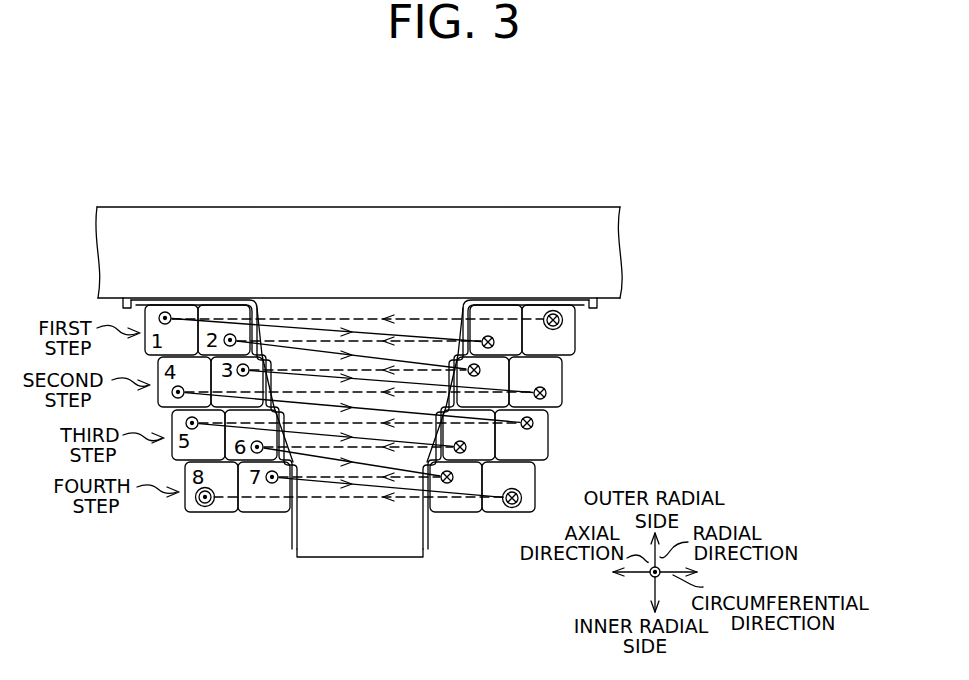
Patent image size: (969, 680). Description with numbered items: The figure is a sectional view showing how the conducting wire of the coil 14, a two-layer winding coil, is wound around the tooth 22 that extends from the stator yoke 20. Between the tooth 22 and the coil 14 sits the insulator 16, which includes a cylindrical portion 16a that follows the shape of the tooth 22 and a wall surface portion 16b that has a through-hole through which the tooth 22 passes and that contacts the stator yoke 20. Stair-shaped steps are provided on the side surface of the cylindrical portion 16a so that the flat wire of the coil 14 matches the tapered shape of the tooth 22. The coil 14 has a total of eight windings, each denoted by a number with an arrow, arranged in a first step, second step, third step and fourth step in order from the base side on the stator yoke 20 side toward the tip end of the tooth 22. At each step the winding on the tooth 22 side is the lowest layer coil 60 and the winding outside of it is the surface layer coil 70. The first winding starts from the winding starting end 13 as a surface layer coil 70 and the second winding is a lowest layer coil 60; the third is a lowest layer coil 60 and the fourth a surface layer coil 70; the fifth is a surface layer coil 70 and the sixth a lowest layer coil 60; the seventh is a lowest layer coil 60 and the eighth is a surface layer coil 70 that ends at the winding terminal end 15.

The winding starting end 13 is at (586, 322).
The coil 14 is at (529, 449).
The winding terminal end 15 is at (195, 504).
The insulator 16 is at (450, 168).
The cylindrical portion 16a is at (446, 326).
The wall surface portion 16b is at (522, 300).
The stator yoke 20 is at (612, 262).
The tooth 22 is at (360, 548).
The lowest layer coil 60 is at (455, 523).
The surface layer coil 70 is at (508, 523).